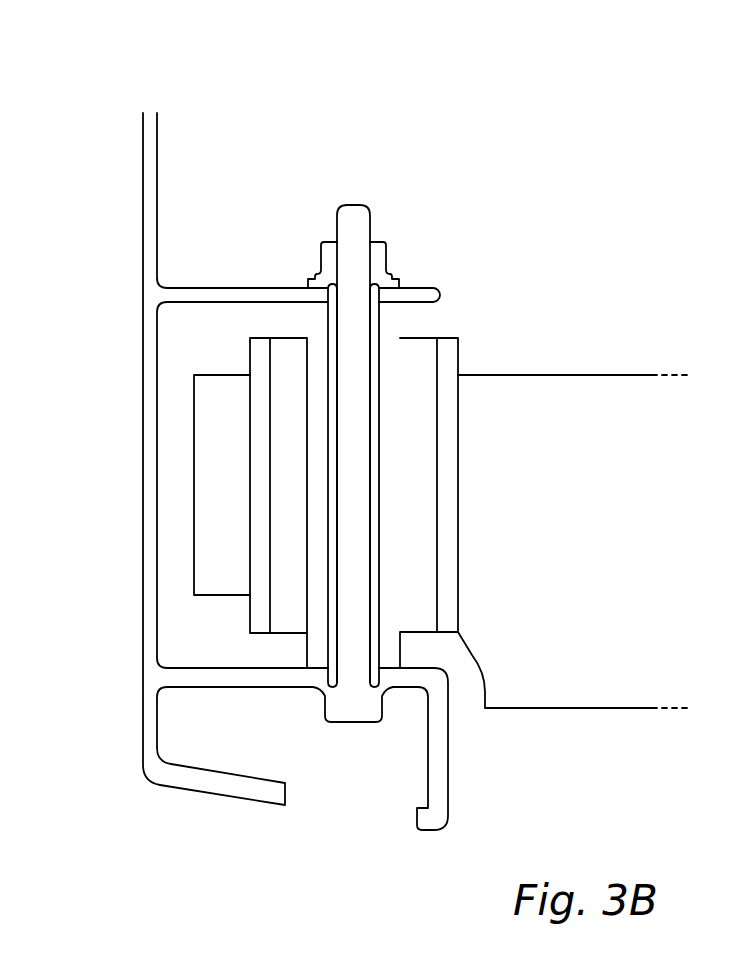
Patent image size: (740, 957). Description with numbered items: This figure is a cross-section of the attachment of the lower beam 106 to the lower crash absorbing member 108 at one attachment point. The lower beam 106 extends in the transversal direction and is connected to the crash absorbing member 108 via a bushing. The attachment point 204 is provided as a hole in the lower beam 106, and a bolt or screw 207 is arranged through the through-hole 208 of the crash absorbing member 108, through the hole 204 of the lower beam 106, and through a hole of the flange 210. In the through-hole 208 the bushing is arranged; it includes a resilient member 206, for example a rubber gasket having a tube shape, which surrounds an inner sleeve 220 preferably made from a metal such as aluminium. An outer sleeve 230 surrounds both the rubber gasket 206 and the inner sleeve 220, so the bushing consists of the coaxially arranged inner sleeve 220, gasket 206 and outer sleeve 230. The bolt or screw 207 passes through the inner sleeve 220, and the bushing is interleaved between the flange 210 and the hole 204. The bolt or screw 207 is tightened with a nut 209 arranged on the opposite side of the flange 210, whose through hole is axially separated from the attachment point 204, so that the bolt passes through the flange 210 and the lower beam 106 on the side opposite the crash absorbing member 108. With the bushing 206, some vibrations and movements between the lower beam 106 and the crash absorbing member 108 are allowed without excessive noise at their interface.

The lower beam 106 is at (148, 732).
The lower crash absorbing member 108 is at (613, 674).
The attachment point 204 is at (307, 708).
The resilient member 206 is at (285, 337).
The bolt or screw 207 is at (363, 205).
The through-hole 208 is at (352, 678).
The nut 209 is at (387, 260).
The flange 210 is at (245, 288).
The inner sleeve 220 is at (315, 434).
The outer sleeve 230 is at (249, 357).